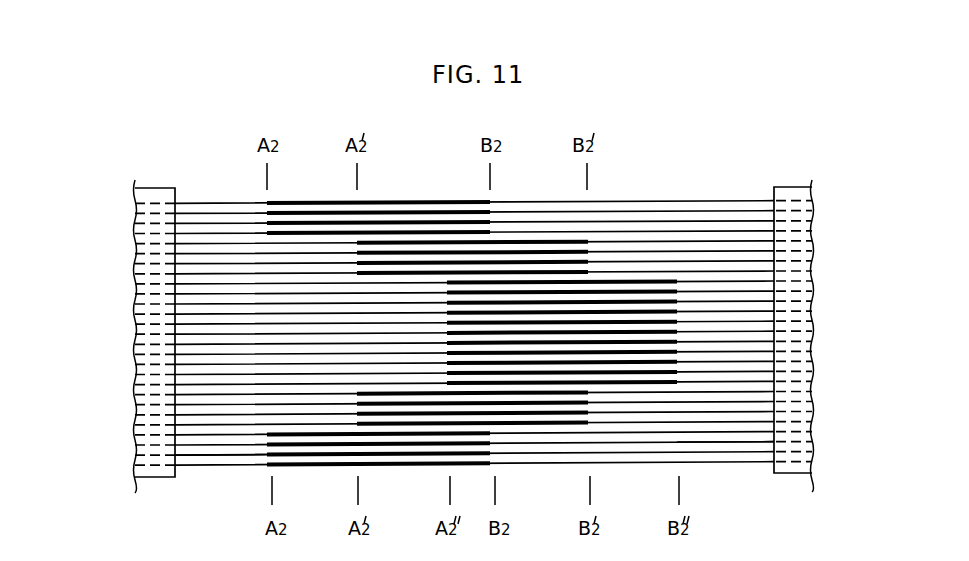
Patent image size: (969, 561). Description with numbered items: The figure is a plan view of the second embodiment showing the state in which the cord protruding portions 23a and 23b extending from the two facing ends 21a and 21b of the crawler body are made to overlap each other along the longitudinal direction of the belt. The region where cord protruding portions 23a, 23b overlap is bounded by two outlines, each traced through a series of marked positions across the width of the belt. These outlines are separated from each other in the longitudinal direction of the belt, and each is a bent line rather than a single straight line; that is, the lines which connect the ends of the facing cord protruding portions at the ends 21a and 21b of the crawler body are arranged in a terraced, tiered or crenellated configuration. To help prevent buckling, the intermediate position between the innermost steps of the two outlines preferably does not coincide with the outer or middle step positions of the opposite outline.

The end of the crawler body 21a is at (162, 479).
The end of the crawler body 21b is at (793, 475).
The cord protruding portion 23a is at (213, 446).
The cord protruding portion 23b is at (739, 433).